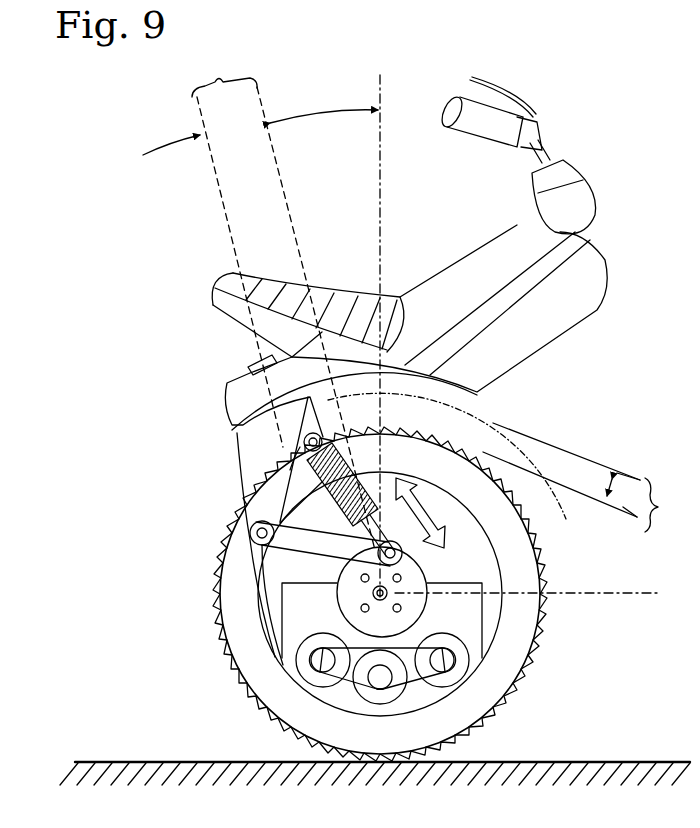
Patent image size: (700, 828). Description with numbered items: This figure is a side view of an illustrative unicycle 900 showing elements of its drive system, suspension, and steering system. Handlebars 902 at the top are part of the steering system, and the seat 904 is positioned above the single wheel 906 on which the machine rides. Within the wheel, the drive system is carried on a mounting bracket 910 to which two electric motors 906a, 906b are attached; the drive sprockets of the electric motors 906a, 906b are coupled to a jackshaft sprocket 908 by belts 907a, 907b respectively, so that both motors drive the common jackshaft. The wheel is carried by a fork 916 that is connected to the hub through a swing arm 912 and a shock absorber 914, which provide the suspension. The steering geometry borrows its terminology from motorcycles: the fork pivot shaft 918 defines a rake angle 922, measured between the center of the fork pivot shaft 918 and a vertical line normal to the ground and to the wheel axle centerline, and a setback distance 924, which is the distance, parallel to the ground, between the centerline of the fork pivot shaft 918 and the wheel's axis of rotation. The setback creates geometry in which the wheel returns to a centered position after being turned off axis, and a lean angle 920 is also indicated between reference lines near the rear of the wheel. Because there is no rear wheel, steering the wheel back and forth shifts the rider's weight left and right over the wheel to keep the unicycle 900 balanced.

The unicycle 900 is at (640, 96).
The handlebars 902 is at (537, 143).
The seat 904 is at (320, 292).
The wheel 906 is at (547, 600).
The electric motor 906a is at (305, 666).
The electric motor 906b is at (440, 648).
The belt 907a is at (350, 680).
The belt 907b is at (417, 672).
The jackshaft sprocket 908 is at (370, 690).
The mounting bracket 910 is at (300, 612).
The swing arm 912 is at (303, 545).
The shock absorber 914 is at (322, 490).
The fork 916 is at (245, 462).
The fork pivot shaft 918 is at (240, 366).
The lean angle 920 is at (591, 477).
The rake angle 922 is at (320, 112).
The setback distance 924 is at (200, 100).